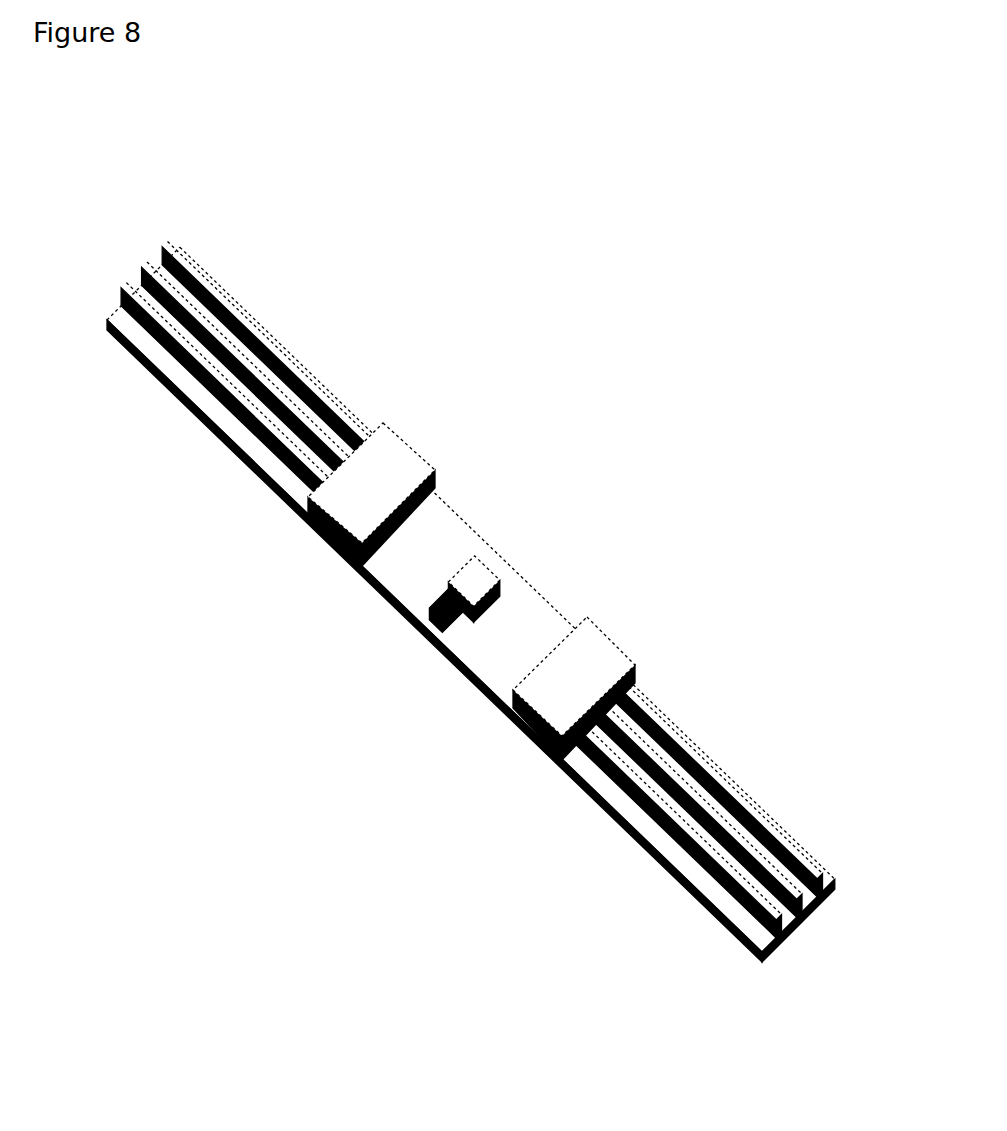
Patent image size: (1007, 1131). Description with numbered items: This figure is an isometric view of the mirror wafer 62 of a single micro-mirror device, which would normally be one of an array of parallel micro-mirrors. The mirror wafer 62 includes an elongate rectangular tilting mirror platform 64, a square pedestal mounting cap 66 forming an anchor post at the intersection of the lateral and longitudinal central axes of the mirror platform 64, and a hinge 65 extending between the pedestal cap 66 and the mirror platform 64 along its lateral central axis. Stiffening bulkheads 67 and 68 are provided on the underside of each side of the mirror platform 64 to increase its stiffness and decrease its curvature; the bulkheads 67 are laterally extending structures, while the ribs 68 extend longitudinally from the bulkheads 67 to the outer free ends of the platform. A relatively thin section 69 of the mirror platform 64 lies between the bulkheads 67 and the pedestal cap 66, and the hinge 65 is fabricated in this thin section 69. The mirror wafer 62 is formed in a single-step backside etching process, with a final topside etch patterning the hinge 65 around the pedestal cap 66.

The mirror wafer 62 is at (299, 283).
The mirror platform 64 is at (441, 518).
The hinge 65 is at (452, 620).
The pedestal mounting cap 66 is at (479, 575).
The stiffening bulkheads 67 is at (386, 493).
The ribs 68 is at (145, 266).
The thin section 69 is at (528, 655).